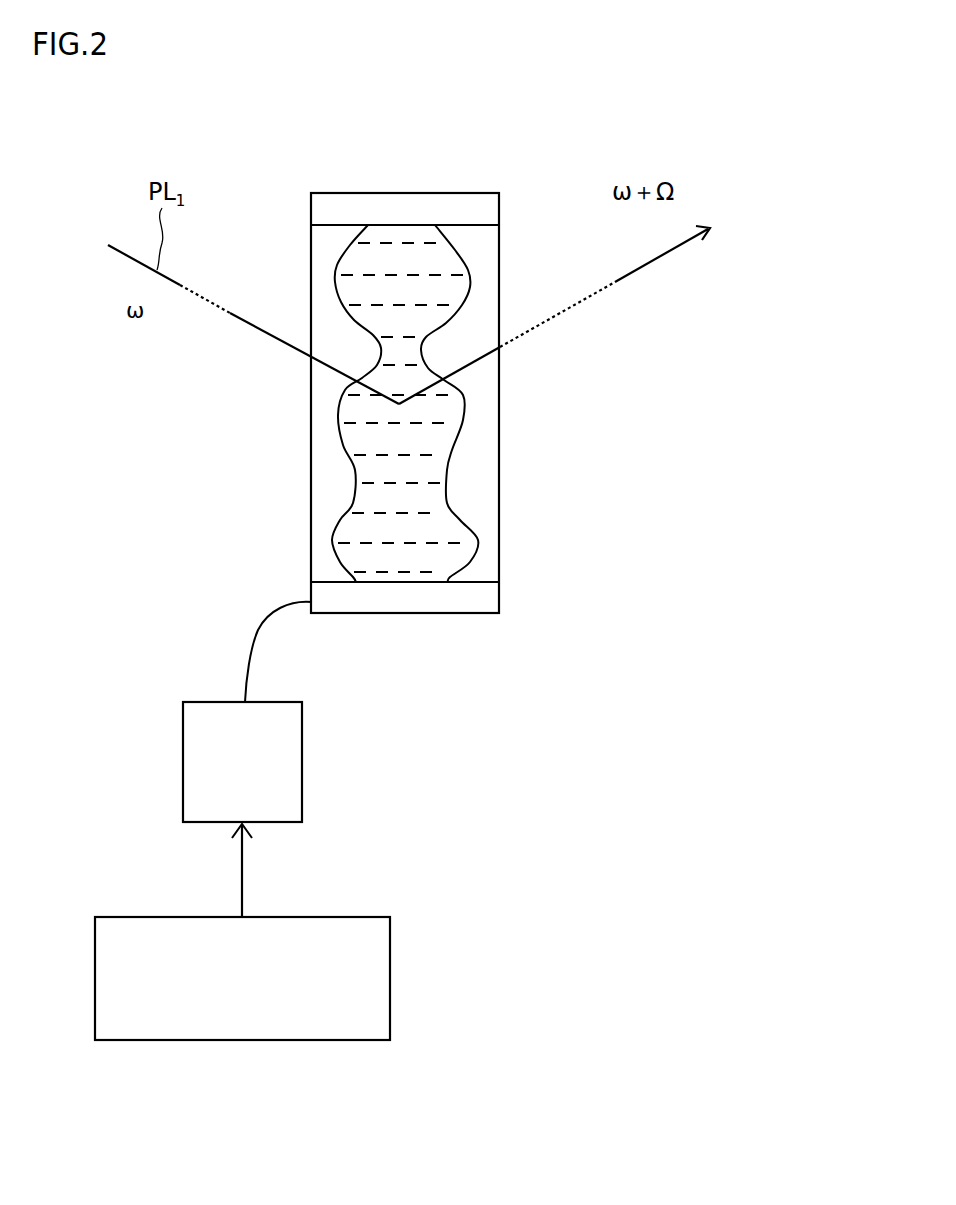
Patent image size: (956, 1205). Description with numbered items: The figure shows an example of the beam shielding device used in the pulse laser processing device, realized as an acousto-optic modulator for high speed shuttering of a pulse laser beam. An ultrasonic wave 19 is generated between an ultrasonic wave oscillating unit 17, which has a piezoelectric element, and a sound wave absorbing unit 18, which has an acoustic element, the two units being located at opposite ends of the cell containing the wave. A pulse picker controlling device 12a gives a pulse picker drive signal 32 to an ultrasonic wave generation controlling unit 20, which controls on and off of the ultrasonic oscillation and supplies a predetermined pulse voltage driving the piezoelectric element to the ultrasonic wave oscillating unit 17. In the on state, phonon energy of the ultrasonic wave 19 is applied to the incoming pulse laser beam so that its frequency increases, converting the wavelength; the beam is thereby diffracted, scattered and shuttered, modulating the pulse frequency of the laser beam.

The ultrasonic wave oscillating unit 17 is at (452, 613).
The sound wave absorbing unit 18 is at (451, 193).
The ultrasonic wave 19 is at (455, 480).
The ultrasonic wave generation controlling unit 20 is at (298, 772).
The pulse picker drive signal 32 is at (240, 873).
The pulse picker controlling device 12a is at (390, 980).